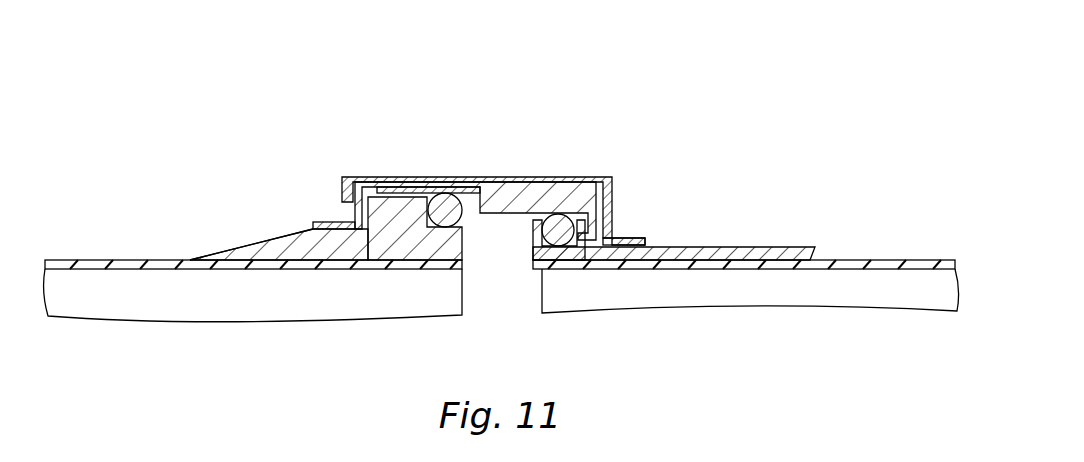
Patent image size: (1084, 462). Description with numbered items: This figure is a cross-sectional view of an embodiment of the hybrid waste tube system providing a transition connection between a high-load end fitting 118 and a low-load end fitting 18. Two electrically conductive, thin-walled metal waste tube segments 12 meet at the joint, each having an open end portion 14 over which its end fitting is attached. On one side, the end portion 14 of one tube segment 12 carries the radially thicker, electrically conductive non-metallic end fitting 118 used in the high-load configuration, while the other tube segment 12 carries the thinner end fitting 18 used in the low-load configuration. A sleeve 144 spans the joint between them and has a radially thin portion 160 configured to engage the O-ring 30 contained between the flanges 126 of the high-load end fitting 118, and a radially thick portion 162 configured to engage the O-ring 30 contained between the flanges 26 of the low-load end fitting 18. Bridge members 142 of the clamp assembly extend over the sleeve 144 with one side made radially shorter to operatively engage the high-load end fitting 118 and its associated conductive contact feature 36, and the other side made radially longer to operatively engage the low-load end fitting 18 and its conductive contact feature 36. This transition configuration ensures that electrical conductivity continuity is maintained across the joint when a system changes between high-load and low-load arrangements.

The waste tube segment 12 is at (150, 258).
The end portion 14 is at (238, 313).
The end fitting 18 is at (738, 247).
The flanges of low-load end fitting 26 is at (622, 262).
The O-ring 30 is at (446, 198).
The conductive contact feature 36 is at (327, 222).
The high-load end fitting 118 is at (280, 240).
The flanges of high-load end fitting 126 is at (357, 247).
The bridge member 142 is at (530, 179).
The sleeve 144 is at (443, 243).
The radially thin portion 160 is at (390, 185).
The radially thick portion 162 is at (520, 185).